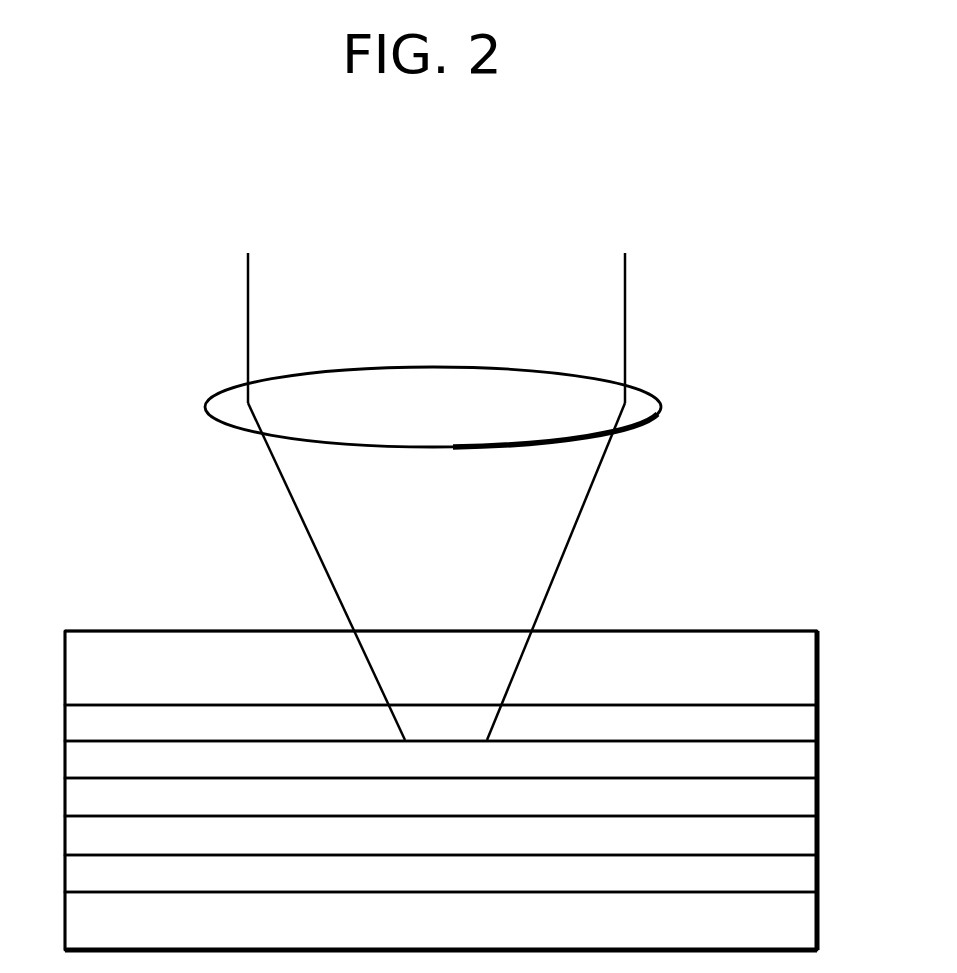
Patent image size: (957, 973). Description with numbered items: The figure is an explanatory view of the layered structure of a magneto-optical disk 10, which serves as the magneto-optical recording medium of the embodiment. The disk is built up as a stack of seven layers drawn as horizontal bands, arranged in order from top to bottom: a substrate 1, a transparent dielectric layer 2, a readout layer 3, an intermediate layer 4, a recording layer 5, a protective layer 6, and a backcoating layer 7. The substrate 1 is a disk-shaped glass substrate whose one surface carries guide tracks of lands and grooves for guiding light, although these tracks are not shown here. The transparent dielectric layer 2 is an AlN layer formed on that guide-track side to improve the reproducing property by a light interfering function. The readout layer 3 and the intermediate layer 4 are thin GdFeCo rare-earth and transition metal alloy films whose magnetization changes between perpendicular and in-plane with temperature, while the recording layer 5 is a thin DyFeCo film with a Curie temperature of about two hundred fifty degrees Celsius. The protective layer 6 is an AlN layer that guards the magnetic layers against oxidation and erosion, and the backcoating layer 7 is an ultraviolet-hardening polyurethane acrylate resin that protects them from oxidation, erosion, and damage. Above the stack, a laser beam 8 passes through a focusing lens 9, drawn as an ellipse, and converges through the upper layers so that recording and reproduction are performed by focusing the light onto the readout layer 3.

The substrate 1 is at (818, 660).
The transparent dielectric layer 2 is at (818, 724).
The readout layer 3 is at (818, 765).
The intermediate layer 4 is at (818, 800).
The recording layer 5 is at (818, 838).
The protective layer 6 is at (818, 875).
The backcoating layer 7 is at (818, 920).
The laser beam 8 is at (625, 297).
The focusing lens 9 is at (662, 400).
The magneto-optical disk 10 is at (761, 616).